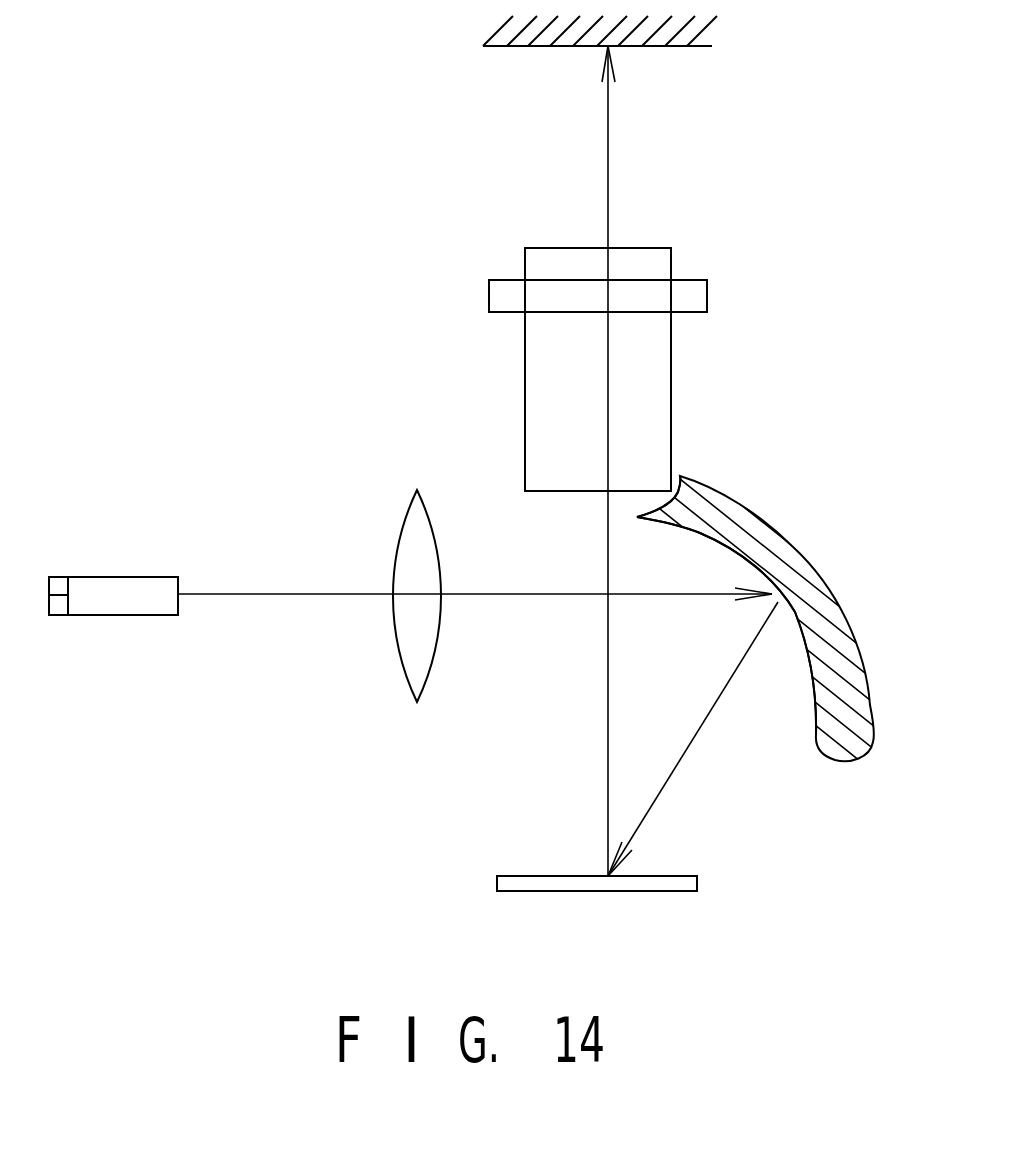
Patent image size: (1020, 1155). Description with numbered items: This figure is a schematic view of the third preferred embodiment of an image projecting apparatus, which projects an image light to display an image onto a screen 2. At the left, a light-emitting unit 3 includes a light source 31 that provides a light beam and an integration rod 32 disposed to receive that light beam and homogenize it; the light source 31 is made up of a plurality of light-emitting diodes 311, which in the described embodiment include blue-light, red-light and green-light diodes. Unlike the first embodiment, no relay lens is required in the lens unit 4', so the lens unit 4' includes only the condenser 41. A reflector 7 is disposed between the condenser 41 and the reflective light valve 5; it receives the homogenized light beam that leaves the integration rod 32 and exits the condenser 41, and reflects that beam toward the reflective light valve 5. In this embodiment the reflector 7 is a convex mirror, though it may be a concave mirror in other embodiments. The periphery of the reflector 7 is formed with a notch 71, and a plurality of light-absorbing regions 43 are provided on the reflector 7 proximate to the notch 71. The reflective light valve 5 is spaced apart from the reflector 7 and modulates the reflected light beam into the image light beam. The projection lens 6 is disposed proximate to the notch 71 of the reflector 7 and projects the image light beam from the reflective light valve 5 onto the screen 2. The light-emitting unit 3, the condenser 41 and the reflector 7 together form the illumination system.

The screen 2 is at (672, 97).
The projection lens 6 is at (552, 262).
The light-emitting unit 3 is at (120, 600).
The light source 31 is at (60, 577).
The light-emitting diodes 311 is at (62, 578).
The integration rod 32 is at (137, 588).
The lens unit 4' is at (389, 636).
The condenser 41 is at (417, 620).
The reflective light valve 5 is at (510, 885).
The reflector 7 is at (756, 641).
The light-absorbing regions 43 is at (640, 520).
The notch 71 is at (648, 506).